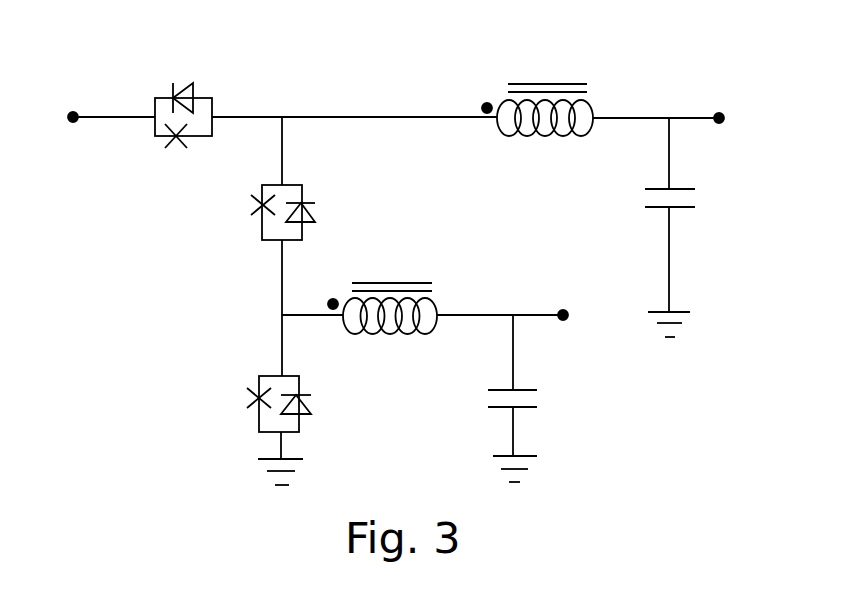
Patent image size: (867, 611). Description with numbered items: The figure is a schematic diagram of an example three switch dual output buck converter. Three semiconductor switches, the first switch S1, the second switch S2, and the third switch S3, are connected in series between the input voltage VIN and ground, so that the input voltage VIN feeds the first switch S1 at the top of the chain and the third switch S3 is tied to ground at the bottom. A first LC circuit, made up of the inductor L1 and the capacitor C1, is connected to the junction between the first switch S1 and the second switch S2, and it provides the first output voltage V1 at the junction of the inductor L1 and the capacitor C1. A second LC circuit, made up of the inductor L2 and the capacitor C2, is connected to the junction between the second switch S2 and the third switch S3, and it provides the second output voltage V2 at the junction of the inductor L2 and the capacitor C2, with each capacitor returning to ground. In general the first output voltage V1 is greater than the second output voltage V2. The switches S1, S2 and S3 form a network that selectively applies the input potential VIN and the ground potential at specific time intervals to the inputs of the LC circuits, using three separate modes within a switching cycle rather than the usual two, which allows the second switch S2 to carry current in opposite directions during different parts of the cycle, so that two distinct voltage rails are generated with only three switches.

The input voltage VIN is at (80, 89).
The first switch S1 is at (204, 103).
The second switch S2 is at (312, 212).
The third switch S3 is at (311, 430).
The inductor L1 is at (537, 137).
The inductor L2 is at (382, 331).
The capacitor C1 is at (644, 227).
The capacitor C2 is at (487, 398).
The first output voltage V1 is at (745, 124).
The second output voltage V2 is at (581, 339).